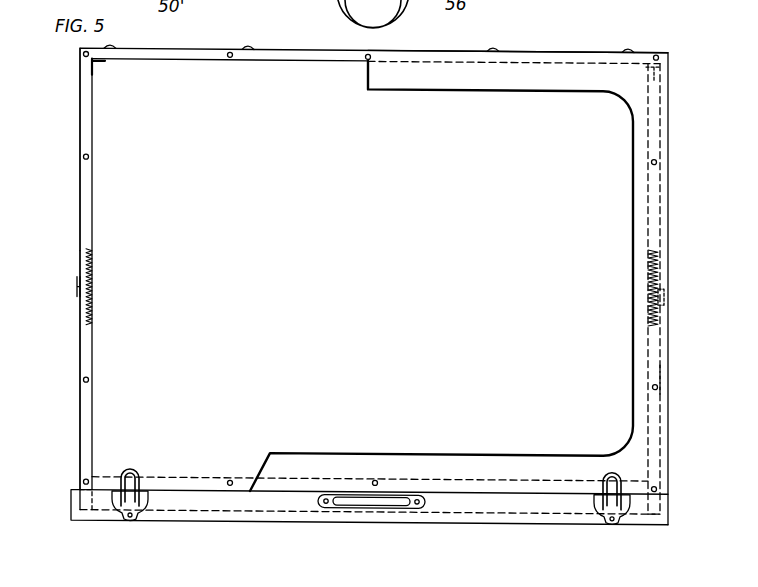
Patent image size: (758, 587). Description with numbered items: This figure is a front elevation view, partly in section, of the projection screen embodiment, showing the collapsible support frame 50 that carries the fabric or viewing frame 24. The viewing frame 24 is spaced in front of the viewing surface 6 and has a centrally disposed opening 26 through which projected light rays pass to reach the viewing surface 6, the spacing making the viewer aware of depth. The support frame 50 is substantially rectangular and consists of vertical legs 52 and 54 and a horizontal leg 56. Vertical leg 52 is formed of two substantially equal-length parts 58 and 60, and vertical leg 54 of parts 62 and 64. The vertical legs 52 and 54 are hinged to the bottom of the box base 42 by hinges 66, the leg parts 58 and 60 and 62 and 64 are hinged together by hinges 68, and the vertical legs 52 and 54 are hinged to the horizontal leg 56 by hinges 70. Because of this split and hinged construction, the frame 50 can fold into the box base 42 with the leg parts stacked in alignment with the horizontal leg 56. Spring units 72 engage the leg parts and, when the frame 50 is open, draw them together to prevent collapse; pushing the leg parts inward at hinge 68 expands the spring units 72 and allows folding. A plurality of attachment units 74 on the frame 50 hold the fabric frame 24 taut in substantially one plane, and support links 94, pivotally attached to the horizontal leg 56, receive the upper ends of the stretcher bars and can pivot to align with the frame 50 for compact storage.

The viewing surface 6 is at (520, 232).
The fabric or viewing frame 24 is at (553, 75).
The centrally disposed opening 26 is at (625, 153).
The box base 42 is at (212, 505).
The support frame 50 is at (78, 172).
The vertical leg 52 is at (80, 217).
The vertical leg 54 is at (660, 214).
The horizontal leg 56 is at (208, 52).
The vertical leg part 58 is at (80, 97).
The vertical leg part 60 is at (80, 396).
The vertical leg part 62 is at (660, 122).
The vertical leg part 64 is at (660, 375).
The hinge 66 is at (105, 490).
The hinge 68 is at (78, 289).
The hinge 70 is at (92, 66).
The spring unit 72 is at (93, 306).
The attachment unit 74 is at (371, 55).
The support link 94 is at (116, 50).